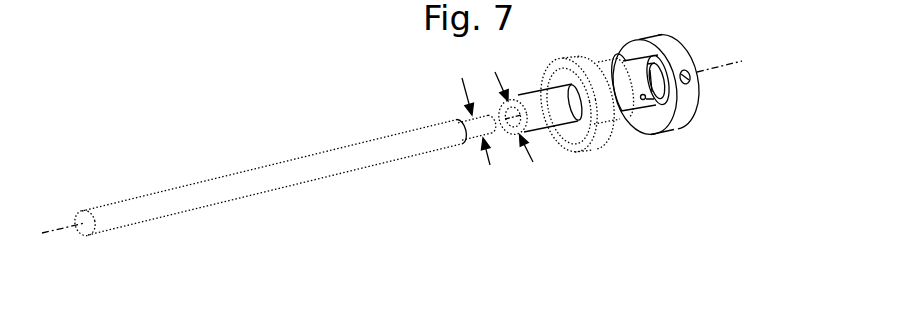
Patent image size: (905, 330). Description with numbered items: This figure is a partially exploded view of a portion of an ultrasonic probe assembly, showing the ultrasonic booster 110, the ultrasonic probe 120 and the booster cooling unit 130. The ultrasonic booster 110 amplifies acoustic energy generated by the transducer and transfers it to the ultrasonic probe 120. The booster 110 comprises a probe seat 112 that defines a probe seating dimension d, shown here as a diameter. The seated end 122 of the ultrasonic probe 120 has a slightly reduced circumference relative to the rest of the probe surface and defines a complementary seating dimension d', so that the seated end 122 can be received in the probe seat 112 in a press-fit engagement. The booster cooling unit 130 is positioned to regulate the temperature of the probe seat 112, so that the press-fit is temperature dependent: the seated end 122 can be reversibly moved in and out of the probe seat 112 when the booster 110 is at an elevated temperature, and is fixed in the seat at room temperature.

The ultrasonic booster 110 is at (587, 150).
The probe seat 112 is at (530, 143).
The ultrasonic probe 120 is at (293, 185).
The seated end 122 is at (467, 142).
The booster cooling unit 130 is at (672, 130).